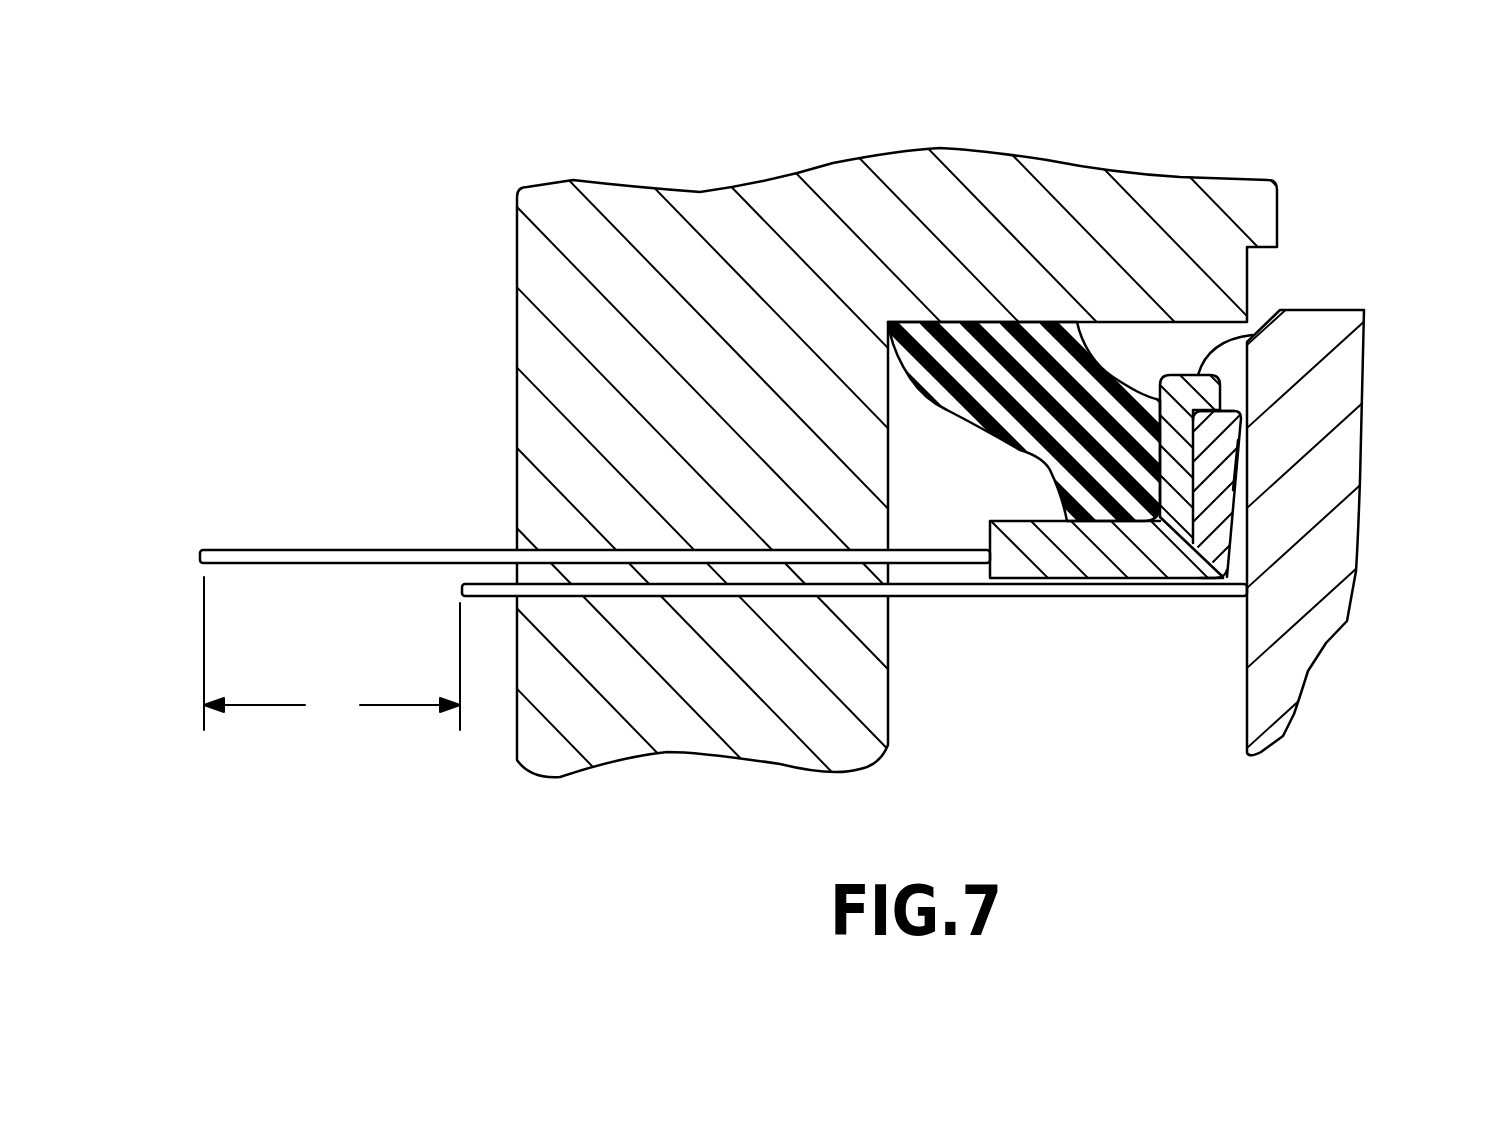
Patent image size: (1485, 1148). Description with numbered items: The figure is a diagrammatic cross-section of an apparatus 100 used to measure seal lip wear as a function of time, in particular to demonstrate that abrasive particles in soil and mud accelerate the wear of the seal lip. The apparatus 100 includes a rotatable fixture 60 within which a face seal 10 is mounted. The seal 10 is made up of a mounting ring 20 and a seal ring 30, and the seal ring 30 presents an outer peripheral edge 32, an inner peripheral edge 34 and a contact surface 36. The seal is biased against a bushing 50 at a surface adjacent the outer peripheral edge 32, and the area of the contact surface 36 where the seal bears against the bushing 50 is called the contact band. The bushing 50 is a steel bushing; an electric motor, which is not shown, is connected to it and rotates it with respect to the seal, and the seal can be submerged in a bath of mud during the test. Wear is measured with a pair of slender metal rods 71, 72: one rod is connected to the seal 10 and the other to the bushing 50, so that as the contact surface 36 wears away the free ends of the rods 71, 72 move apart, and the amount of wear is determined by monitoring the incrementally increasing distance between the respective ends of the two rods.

The face seal 10 is at (1166, 349).
The mounting ring 20 is at (1255, 336).
The seal ring 30 is at (1239, 467).
The outer peripheral edge 32 is at (1241, 408).
The inner peripheral edge 34 is at (1228, 579).
The contact surface 36 is at (1250, 473).
The bushing 50 is at (1325, 318).
The rotatable fixture 60 is at (718, 213).
The slender metal rod 71 is at (497, 582).
The slender metal rod 72 is at (288, 548).
The apparatus 100 is at (1323, 222).